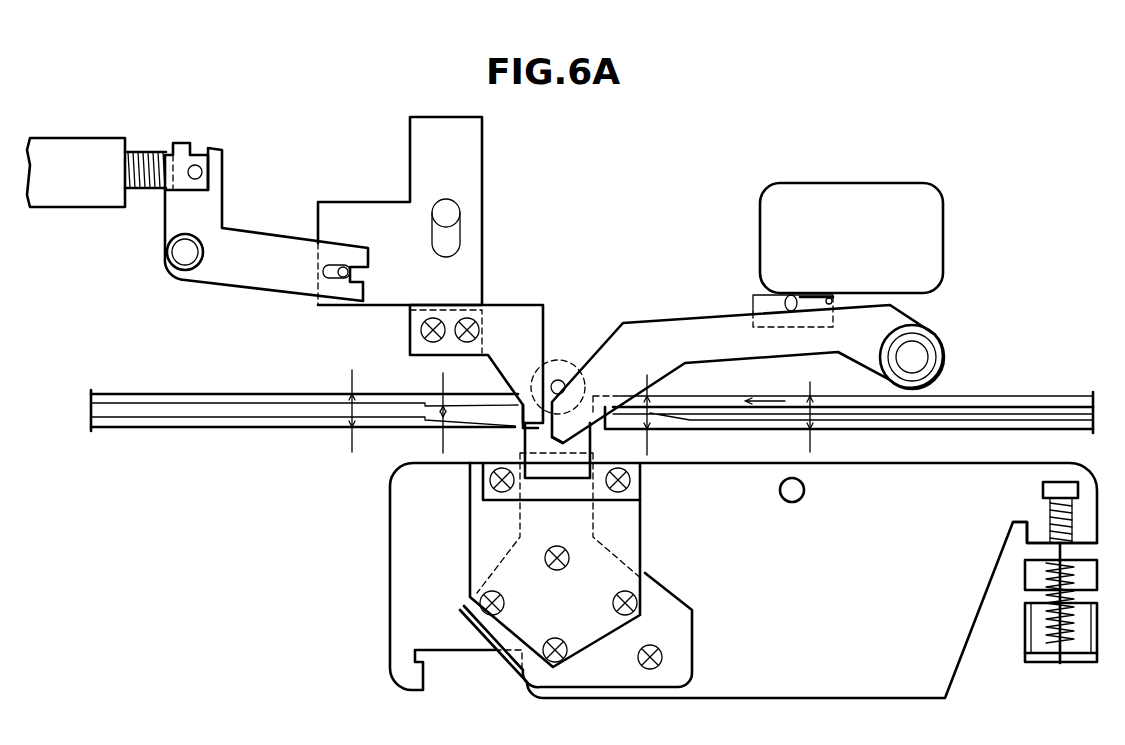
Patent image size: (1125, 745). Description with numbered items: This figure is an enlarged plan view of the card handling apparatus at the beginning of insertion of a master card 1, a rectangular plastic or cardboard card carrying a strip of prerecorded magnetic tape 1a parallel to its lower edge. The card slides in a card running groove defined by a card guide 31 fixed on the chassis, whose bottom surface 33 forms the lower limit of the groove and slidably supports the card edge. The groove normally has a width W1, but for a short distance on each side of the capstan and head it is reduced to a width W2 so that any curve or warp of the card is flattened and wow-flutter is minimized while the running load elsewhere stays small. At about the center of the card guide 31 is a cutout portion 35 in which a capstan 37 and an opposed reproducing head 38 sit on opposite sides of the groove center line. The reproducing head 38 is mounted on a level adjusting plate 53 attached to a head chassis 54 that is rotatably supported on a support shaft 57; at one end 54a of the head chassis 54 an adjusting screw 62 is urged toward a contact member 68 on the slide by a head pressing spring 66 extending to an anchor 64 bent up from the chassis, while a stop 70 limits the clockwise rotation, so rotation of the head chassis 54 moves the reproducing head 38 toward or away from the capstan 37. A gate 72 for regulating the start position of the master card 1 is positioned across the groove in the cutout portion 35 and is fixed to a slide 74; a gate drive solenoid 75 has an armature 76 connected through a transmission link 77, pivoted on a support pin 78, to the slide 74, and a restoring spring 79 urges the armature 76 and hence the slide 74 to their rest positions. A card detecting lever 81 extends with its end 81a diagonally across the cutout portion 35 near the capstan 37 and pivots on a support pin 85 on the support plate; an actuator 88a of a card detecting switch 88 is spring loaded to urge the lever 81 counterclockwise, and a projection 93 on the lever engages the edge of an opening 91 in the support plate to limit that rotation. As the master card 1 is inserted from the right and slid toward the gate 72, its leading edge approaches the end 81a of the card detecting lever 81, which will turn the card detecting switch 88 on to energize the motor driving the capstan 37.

The master card 1 is at (1012, 418).
The magnetic tape 1a is at (963, 420).
The card guide 31 is at (268, 403).
The bottom surface 33 is at (170, 407).
The cutout portion 35 is at (518, 428).
The capstan 37 is at (563, 372).
The reproducing head 38 is at (575, 478).
The level adjusting plate 53 is at (622, 527).
The head chassis 54 is at (770, 698).
The end of head chassis 54a is at (1030, 541).
The support shaft 57 is at (797, 503).
The adjusting screw 62 is at (1043, 490).
The anchor 64 is at (1047, 662).
The head pressing spring 66 is at (1052, 598).
The contact member 68 is at (1025, 585).
The stop 70 is at (1040, 640).
The gate 72 is at (500, 306).
The slide 74 is at (462, 157).
The gate drive solenoid 75 is at (73, 203).
The armature 76 is at (130, 192).
The transmission link 77 is at (228, 262).
The support pin 78 is at (168, 264).
The restoring spring 79 is at (132, 150).
The card detecting lever 81 is at (683, 322).
The end of card detecting lever 81a is at (565, 445).
The support pin 85 is at (914, 357).
The card detecting switch 88 is at (847, 197).
The actuator 88a is at (792, 296).
The opening 91 is at (835, 296).
The projection 93 is at (793, 326).
The width of card running groove W1 is at (354, 408).
The reduced width W2 is at (443, 416).